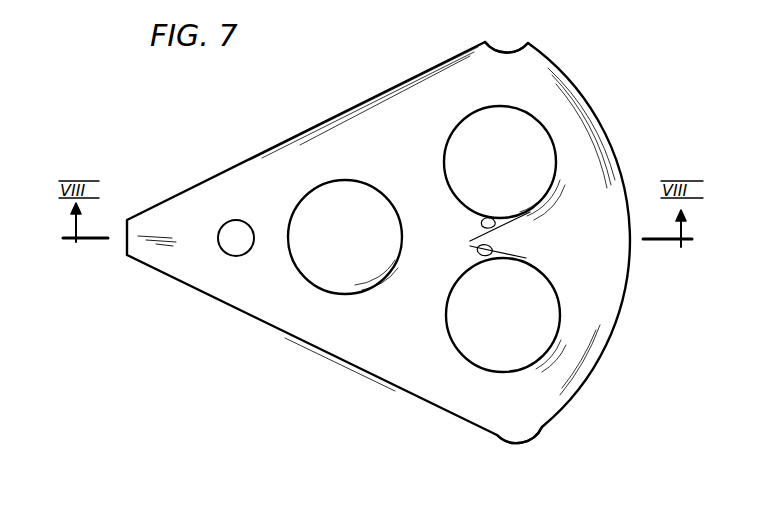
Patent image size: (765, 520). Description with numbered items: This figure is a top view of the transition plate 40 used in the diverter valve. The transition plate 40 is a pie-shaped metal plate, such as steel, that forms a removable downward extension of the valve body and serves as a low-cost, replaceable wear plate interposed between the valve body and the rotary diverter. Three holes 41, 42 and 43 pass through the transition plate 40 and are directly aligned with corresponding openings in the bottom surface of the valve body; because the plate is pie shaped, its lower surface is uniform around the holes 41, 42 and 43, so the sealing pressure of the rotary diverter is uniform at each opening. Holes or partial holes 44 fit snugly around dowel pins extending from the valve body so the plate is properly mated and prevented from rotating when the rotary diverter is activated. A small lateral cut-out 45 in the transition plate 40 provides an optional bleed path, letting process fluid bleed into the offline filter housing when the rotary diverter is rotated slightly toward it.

The transition plate 40 is at (413, 135).
The hole 41 is at (320, 198).
The hole 42 is at (543, 333).
The hole 43 is at (540, 148).
The holes or partial holes 44 is at (509, 50).
The lateral cut-out 45 is at (485, 235).